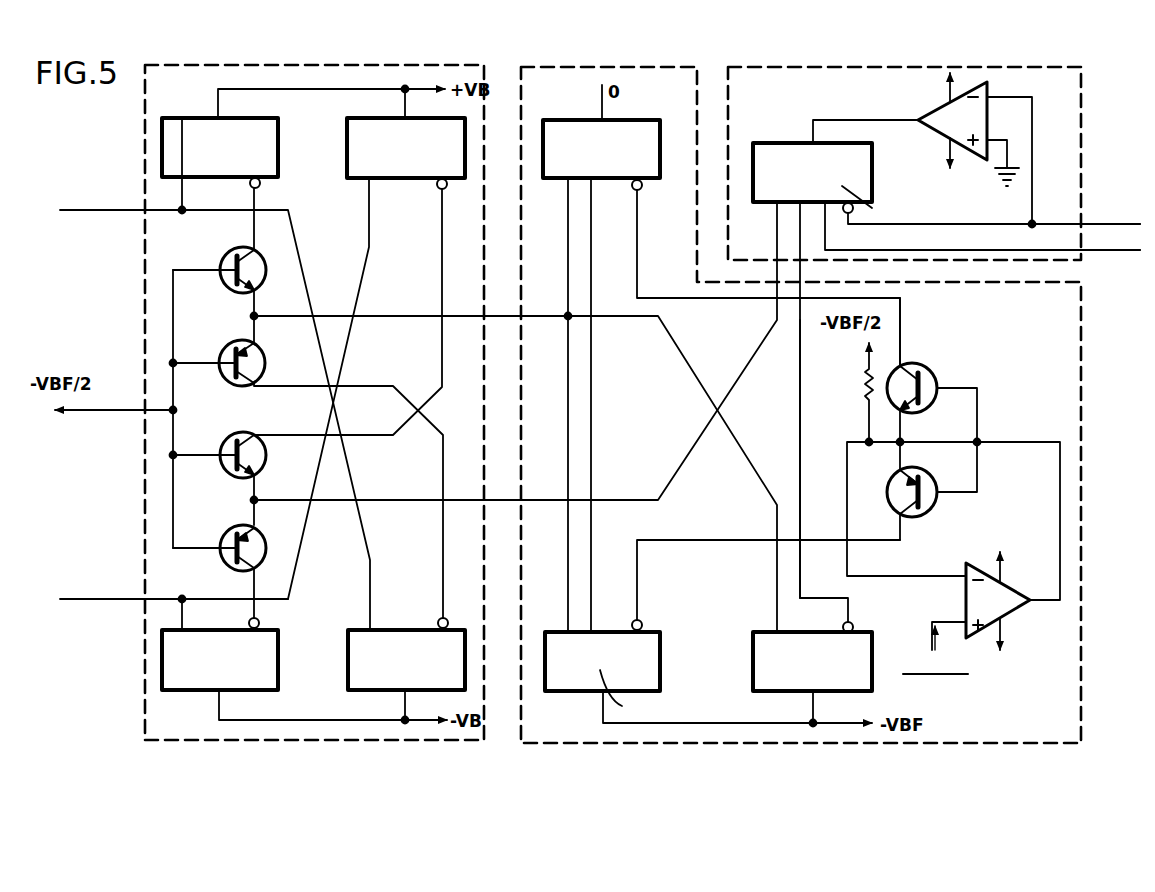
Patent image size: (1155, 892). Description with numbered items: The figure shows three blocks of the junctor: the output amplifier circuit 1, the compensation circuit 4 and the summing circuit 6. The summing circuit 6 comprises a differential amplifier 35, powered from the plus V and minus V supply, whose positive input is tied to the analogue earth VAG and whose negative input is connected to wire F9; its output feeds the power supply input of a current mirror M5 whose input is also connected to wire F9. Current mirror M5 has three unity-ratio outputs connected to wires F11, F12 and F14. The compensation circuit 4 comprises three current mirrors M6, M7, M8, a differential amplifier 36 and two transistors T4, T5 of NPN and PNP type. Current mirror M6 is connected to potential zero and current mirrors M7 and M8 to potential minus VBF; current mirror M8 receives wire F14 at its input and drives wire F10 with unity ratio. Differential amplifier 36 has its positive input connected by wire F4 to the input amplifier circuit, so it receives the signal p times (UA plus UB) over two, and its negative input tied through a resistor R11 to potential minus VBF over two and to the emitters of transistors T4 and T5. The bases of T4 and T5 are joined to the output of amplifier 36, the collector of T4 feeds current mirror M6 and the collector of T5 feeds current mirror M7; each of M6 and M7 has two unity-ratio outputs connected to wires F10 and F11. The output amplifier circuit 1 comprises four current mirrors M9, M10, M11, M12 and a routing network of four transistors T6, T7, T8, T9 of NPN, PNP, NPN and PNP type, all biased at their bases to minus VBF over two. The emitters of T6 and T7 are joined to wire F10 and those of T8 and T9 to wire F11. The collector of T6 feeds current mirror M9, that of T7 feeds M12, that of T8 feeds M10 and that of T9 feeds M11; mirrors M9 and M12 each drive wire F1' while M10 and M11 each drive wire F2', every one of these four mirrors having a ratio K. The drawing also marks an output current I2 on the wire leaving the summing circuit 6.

The output amplifier circuit 1 is at (165, 702).
The compensation circuit 4 is at (1060, 713).
The summing circuit 6 is at (1068, 111).
The current mirror M5 is at (790, 155).
The current mirror M6 is at (568, 128).
The current mirror M7 is at (645, 641).
The current mirror M8 is at (768, 645).
The current mirror M9 is at (208, 120).
The current mirror M10 is at (350, 142).
The current mirror M11 is at (275, 645).
The current mirror M12 is at (380, 668).
The transistor T4 is at (922, 366).
The transistor T5 is at (922, 470).
The transistor T6 is at (228, 255).
The transistor T7 is at (228, 348).
The transistor T8 is at (228, 440).
The transistor T9 is at (228, 533).
The resistor R11 is at (864, 394).
The differential amplifier 35 is at (948, 118).
The differential amplifier 36 is at (975, 586).
The wire F1' is at (215, 404).
The wire F2' is at (174, 599).
The wire F4 is at (932, 630).
The wire F9 is at (1092, 224).
The wire F10 is at (503, 316).
The wire F11 is at (503, 500).
The wire F12 is at (1120, 250).
The wire F14 is at (800, 435).
The output current I2 is at (1130, 218).